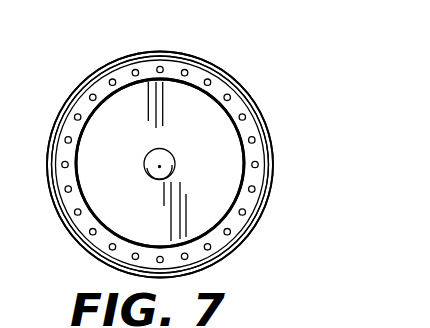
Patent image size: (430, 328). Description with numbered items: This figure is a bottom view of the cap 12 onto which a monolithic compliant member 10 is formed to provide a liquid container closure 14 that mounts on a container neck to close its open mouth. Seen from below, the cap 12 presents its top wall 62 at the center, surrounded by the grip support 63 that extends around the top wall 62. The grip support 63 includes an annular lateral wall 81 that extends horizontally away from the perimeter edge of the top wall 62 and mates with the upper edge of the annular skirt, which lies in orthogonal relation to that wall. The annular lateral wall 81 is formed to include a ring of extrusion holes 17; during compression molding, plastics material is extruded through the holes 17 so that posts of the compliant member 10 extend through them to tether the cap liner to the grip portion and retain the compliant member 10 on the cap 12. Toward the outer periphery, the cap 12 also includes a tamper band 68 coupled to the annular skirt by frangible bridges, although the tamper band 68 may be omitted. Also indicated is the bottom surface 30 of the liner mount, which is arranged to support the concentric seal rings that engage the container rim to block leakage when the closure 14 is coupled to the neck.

The monolithic compliant member 10 is at (83, 240).
The liquid container closure 14 is at (77, 78).
The cap 12 is at (229, 72).
The bottom surface 30 is at (255, 107).
The tamper band 68 is at (275, 173).
The hole 17 is at (68, 163).
The top wall 62 is at (210, 132).
The grip support 63 is at (240, 133).
The annular lateral wall 81 is at (98, 88).